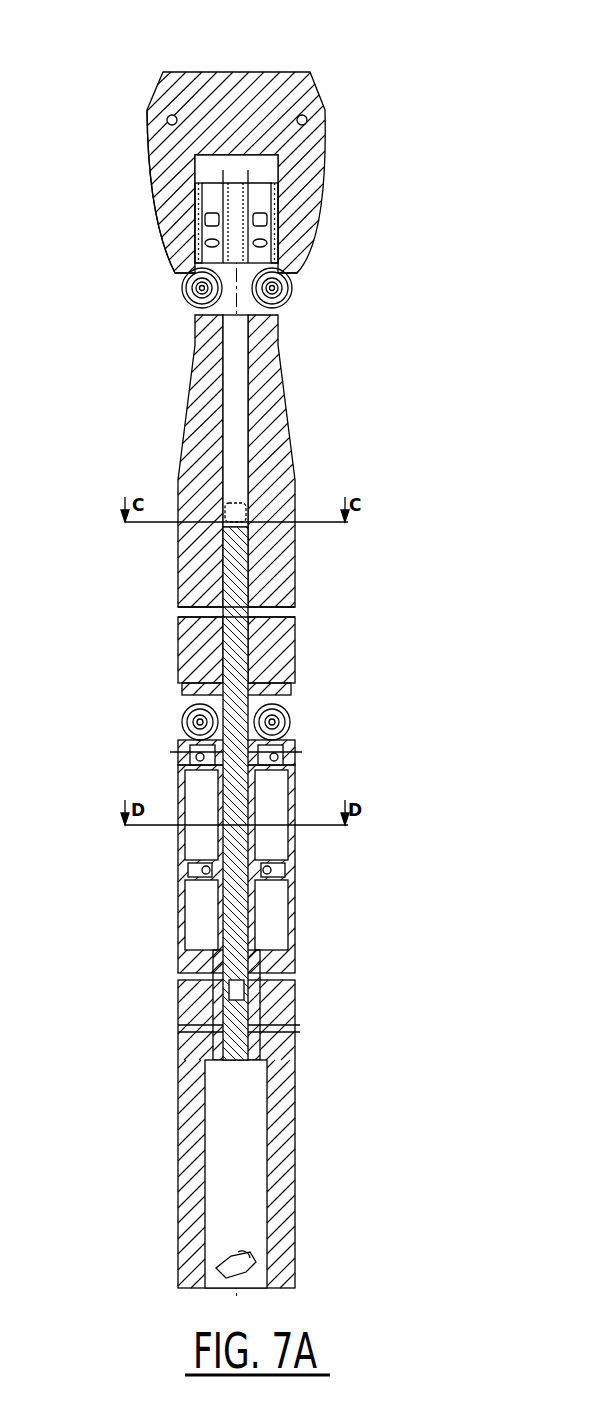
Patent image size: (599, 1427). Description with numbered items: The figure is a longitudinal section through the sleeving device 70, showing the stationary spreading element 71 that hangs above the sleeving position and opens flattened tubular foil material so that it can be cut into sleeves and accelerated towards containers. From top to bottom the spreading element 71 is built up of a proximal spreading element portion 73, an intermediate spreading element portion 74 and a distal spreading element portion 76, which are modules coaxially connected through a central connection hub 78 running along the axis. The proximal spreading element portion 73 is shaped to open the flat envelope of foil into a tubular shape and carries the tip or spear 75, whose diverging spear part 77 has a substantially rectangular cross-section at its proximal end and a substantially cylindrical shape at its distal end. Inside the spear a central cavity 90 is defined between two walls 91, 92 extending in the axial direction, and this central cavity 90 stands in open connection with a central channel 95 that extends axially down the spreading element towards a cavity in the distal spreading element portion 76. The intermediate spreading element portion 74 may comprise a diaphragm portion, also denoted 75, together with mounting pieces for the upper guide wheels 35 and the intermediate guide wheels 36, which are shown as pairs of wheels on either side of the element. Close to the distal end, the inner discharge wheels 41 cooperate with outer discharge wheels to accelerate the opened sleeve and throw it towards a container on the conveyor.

The sleeving device 70 is at (420, 195).
The stationary spreading element 71 is at (277, 567).
The proximal spreading element portion 73 is at (162, 177).
The intermediate spreading element portion 74 is at (192, 647).
The spear 75 is at (278, 908).
The distal spreading element portion 76 is at (225, 1202).
The diverging spear part 77 is at (297, 163).
The central connection hub 78 is at (238, 800).
The central cavity 90 is at (203, 162).
The wall 91 is at (192, 220).
The wall 92 is at (263, 220).
The central channel 95 is at (243, 403).
The upper guide wheels 35 is at (186, 287).
The intermediate guide wheels 36 is at (182, 722).
The inner discharge wheels 41 is at (245, 1250).